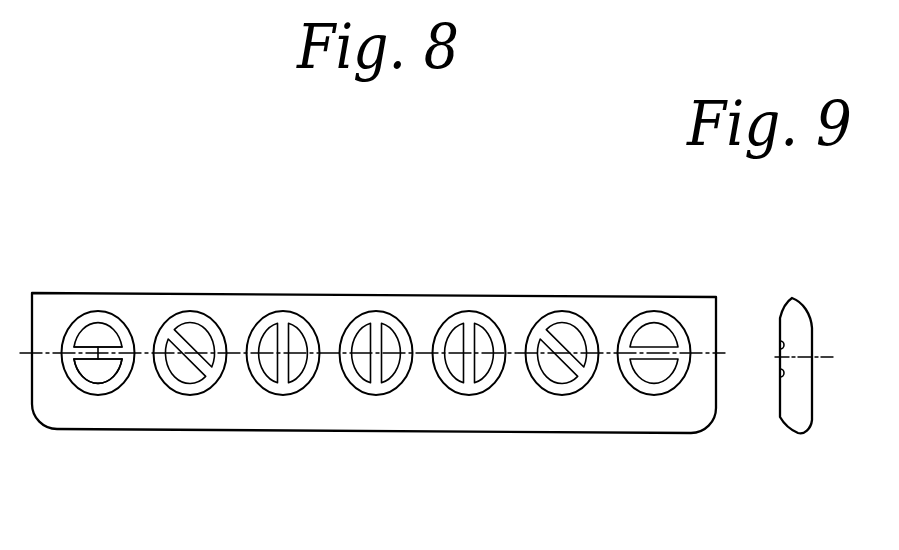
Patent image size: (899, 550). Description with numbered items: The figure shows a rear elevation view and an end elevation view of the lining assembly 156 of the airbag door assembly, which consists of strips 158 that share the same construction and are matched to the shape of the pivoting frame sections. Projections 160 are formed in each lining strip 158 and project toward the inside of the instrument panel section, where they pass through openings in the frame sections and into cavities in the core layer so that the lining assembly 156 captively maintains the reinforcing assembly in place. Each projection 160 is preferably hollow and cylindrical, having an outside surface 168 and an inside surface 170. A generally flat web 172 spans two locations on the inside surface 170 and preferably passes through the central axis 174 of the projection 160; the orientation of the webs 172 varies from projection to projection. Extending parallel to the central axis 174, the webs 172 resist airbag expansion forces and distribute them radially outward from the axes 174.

In FIG. 8, the lining assembly 156 is at (465, 305).
In FIG. 9, the lining assembly 156 is at (811, 327).
In FIG. 8, the strips 158 is at (347, 310).
In FIG. 9, the strips 158 is at (813, 350).
In FIG. 8, the projections 160 is at (113, 324).
In FIG. 8, the outside surface 168 is at (100, 311).
In FIG. 8, the inside surface 170 is at (108, 378).
In FIG. 8, the web 172 is at (82, 343).
In FIG. 8, the central axis 174 is at (122, 343).